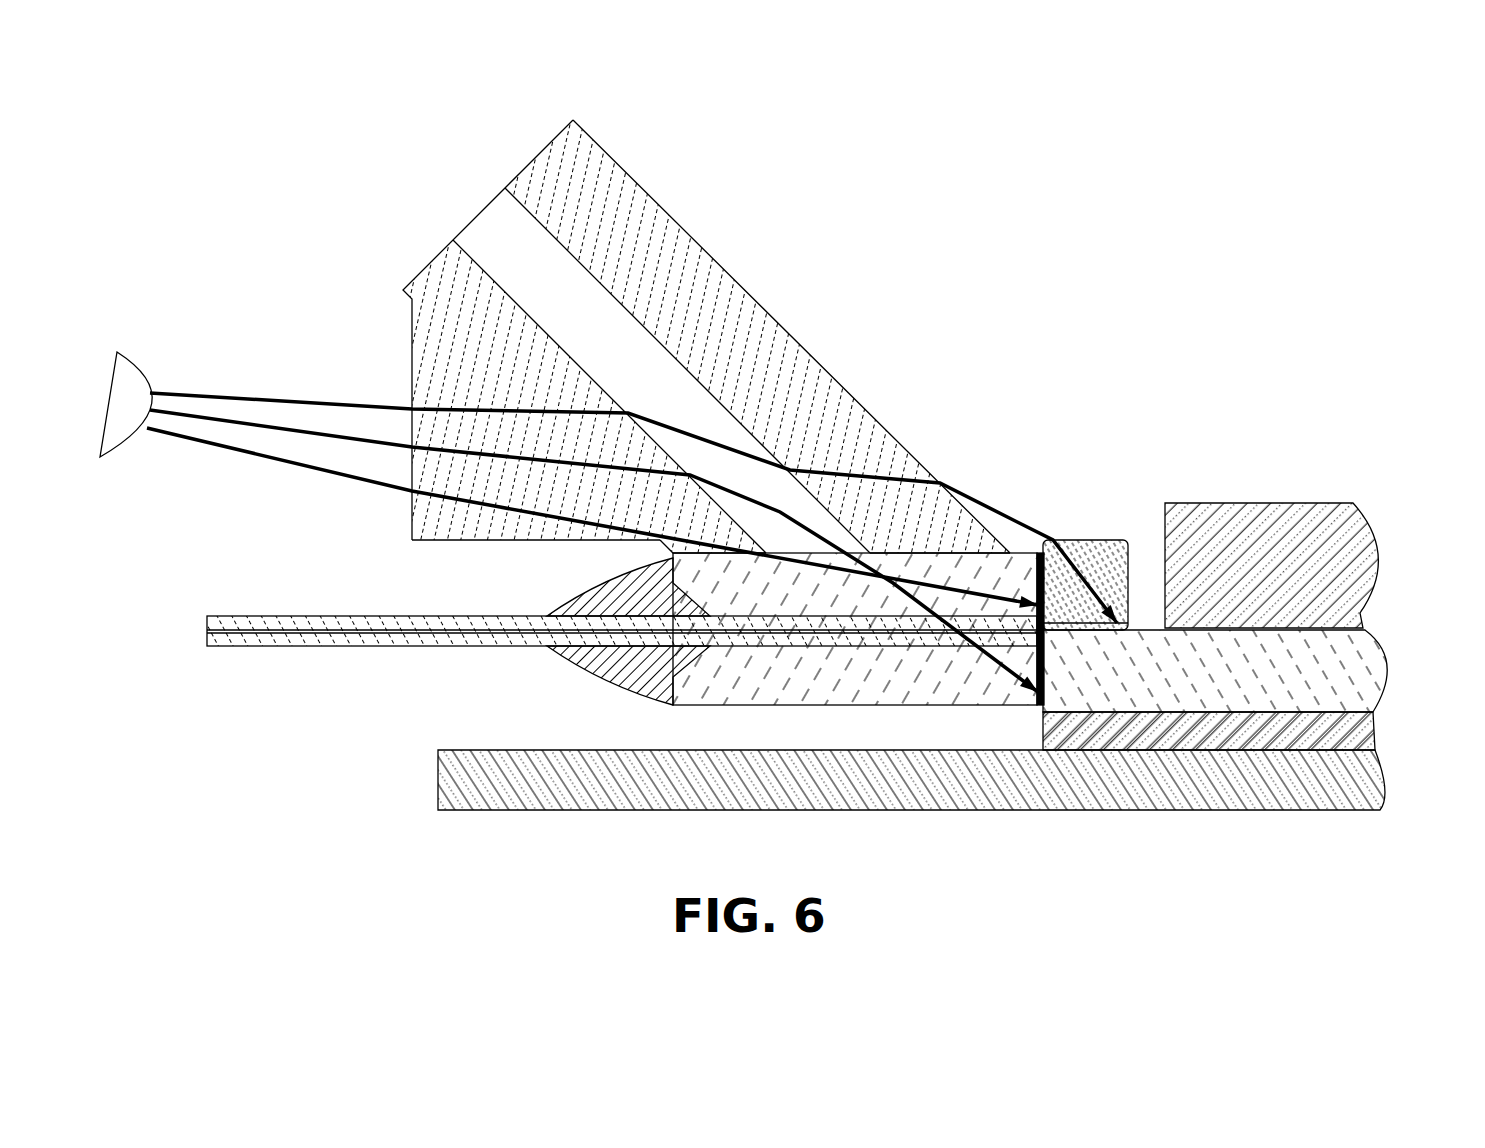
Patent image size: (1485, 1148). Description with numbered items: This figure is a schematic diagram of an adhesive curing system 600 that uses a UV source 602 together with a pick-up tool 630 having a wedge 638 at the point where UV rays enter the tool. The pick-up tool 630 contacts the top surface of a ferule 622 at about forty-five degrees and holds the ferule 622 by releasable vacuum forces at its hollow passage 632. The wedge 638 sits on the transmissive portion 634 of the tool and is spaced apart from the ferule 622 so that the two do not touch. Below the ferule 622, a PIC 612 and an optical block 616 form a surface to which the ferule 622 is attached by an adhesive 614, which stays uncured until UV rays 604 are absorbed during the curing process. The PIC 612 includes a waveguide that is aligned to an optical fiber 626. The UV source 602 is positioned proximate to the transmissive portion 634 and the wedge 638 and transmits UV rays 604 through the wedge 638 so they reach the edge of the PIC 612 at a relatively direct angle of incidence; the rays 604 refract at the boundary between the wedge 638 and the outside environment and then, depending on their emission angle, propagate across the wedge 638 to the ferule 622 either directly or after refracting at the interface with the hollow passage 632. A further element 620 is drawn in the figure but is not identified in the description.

The adhesive curing system 600 is at (222, 218).
The UV source 602 is at (102, 360).
The UV rays 604 is at (293, 465).
The PIC 612 is at (1385, 658).
The adhesive 614 is at (1042, 705).
The optical block 616 is at (1085, 540).
The waveguide block 620 is at (530, 663).
The ferule 622 is at (683, 590).
The optical fiber 626 is at (323, 646).
The pick-up tool 630 is at (510, 153).
The hollow passage 632 is at (482, 215).
The transmissive portion 634 is at (432, 262).
The wedge 638 is at (420, 547).